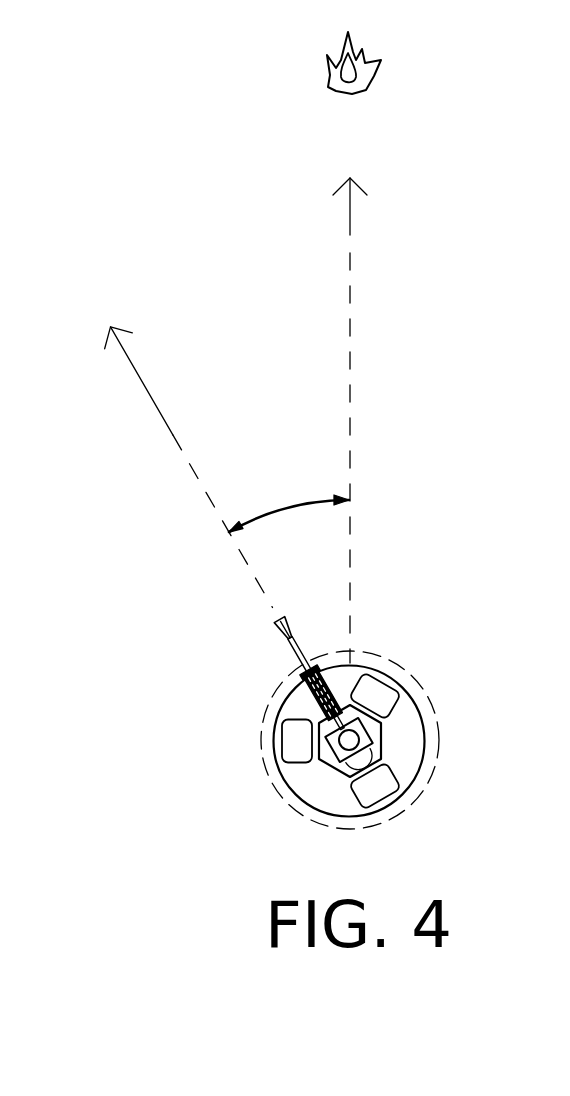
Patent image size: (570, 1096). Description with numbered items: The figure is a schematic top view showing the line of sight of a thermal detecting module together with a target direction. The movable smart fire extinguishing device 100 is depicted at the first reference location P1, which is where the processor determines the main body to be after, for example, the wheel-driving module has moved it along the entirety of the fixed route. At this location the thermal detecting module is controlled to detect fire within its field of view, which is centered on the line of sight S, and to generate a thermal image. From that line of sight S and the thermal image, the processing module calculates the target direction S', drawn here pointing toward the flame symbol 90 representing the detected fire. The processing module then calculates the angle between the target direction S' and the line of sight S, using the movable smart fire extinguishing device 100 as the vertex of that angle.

The heat source (flame) 90 is at (328, 82).
The movable smart fire extinguishing device 100 is at (420, 708).
The first reference location P1 is at (442, 727).
The line of sight S is at (192, 467).
The target direction S' is at (327, 420).